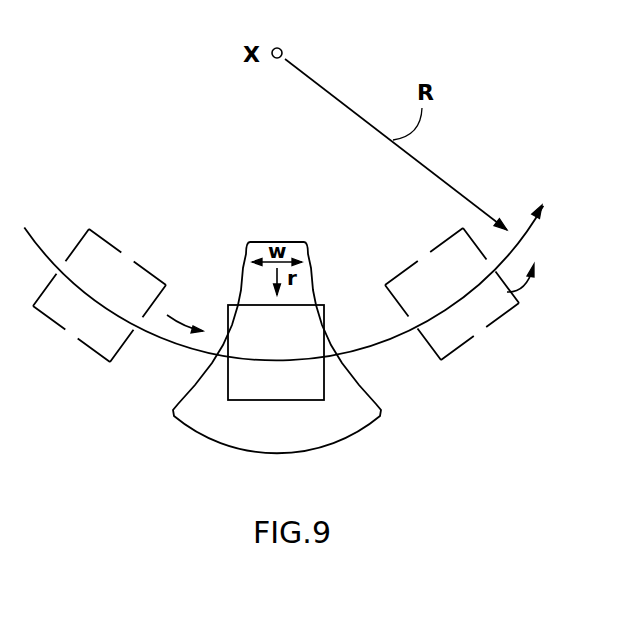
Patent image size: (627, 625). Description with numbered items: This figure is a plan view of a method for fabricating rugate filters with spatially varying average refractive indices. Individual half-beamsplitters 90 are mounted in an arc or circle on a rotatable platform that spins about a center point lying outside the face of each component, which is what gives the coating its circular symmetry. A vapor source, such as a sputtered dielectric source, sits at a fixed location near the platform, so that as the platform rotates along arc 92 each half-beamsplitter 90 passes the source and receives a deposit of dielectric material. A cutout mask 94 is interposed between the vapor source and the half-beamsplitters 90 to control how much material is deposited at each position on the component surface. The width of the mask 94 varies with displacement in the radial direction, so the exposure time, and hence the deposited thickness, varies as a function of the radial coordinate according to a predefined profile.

The half-beamsplitter 90 is at (70, 333).
The arc 92 is at (523, 238).
The cutout mask 94 is at (318, 447).